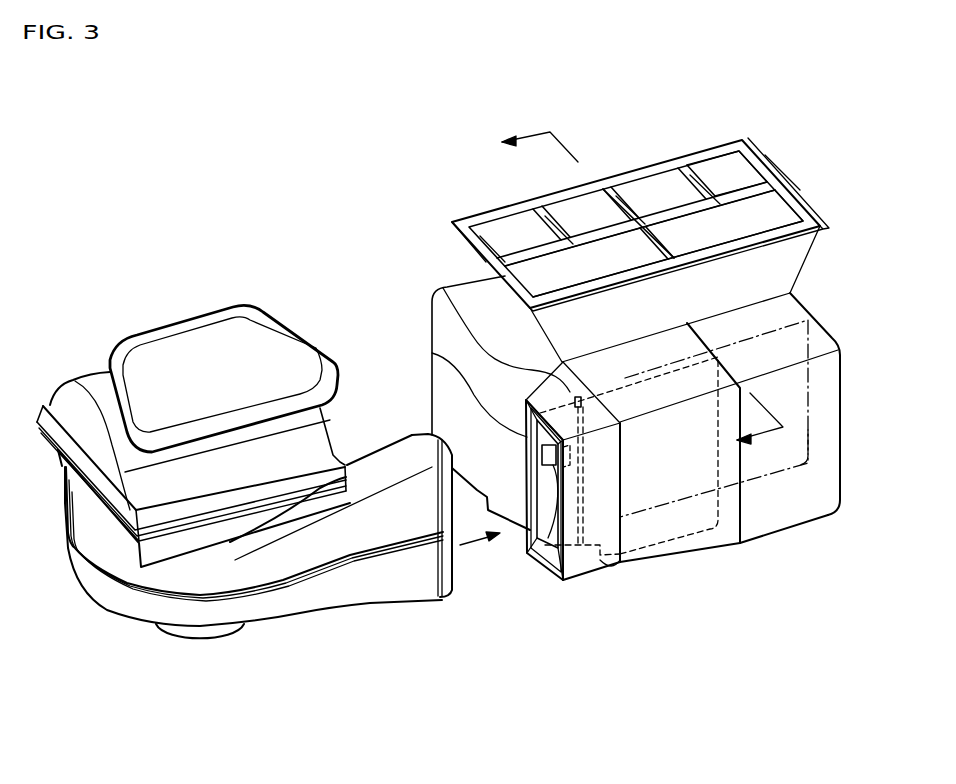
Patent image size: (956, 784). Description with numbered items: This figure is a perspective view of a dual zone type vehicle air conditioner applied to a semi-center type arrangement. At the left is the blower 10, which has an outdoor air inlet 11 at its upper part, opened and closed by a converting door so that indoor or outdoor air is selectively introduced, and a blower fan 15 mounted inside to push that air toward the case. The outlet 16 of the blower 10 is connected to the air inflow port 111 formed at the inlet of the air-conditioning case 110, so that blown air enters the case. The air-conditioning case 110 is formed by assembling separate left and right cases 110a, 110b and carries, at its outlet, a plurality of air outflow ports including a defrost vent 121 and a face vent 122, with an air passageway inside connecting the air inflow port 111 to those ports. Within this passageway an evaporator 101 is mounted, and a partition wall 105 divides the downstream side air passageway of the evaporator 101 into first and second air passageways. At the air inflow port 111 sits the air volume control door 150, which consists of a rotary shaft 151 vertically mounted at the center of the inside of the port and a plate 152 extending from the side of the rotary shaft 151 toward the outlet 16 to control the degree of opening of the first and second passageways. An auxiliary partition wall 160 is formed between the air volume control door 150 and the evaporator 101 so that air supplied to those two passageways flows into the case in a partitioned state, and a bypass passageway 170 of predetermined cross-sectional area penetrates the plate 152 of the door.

The blower 10 is at (250, 500).
The outdoor air inlet 11 is at (185, 340).
The blower fan 15 is at (163, 637).
The outlet 16 is at (448, 577).
The evaporator 101 is at (810, 330).
The partition wall 105 is at (630, 200).
The air-conditioning case 110 is at (808, 293).
The left case 110a is at (710, 540).
The right case 110b is at (795, 513).
The air inflow port 111 is at (589, 578).
The defrost vent 121 is at (747, 220).
The face vent 122 is at (713, 172).
The air volume control door 150 is at (373, 287).
The rotary shaft 151 is at (440, 289).
The plate 152 is at (432, 354).
The auxiliary partition wall 160 is at (658, 543).
The bypass passageway 170 is at (540, 523).